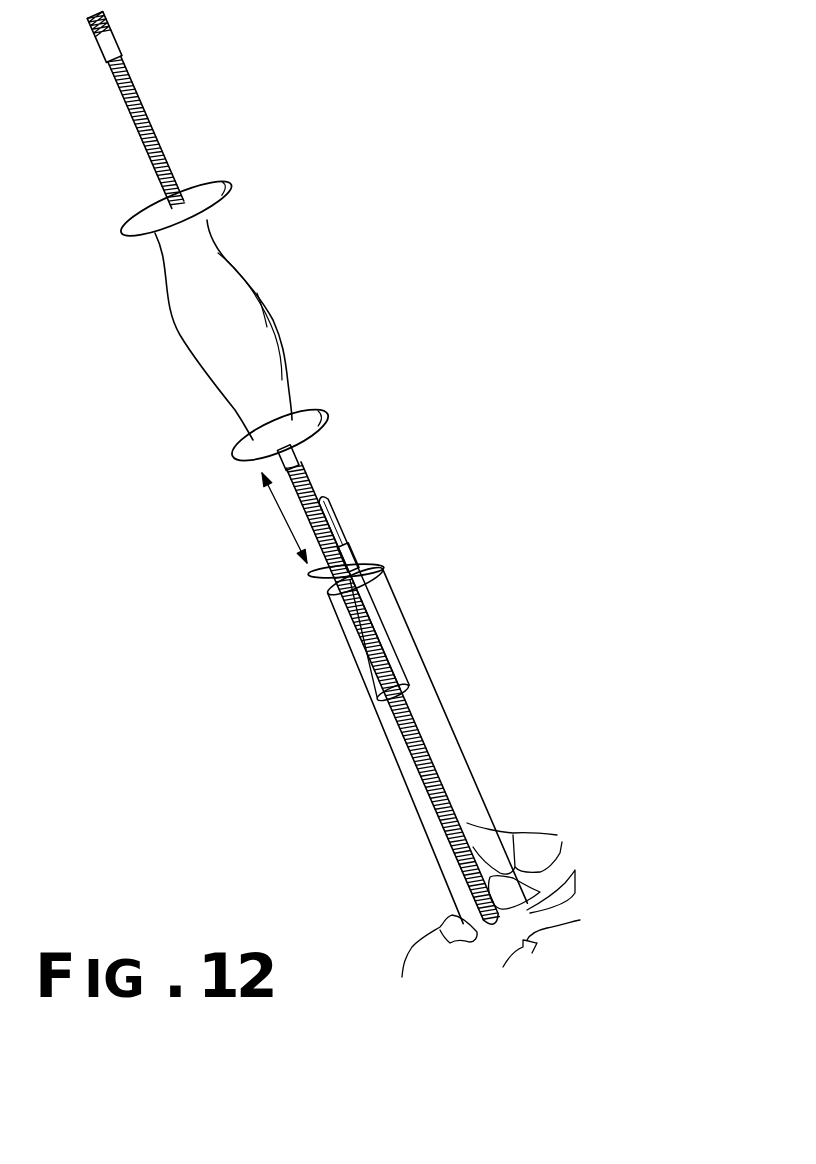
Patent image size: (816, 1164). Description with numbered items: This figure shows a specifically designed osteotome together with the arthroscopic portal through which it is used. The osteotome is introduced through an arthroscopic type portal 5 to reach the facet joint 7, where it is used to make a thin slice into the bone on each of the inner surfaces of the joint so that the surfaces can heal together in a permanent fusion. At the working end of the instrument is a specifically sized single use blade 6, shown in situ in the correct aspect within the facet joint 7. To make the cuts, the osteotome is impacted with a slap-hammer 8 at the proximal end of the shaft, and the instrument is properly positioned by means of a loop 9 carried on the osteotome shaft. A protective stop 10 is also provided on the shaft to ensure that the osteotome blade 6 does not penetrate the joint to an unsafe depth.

The arthroscopic type portal 5 is at (455, 723).
The single use blade 6 is at (470, 900).
The facet joint 7 is at (507, 932).
The slap-hammer 8 is at (227, 345).
The loop 9 is at (328, 502).
The protective stop 10 is at (307, 585).